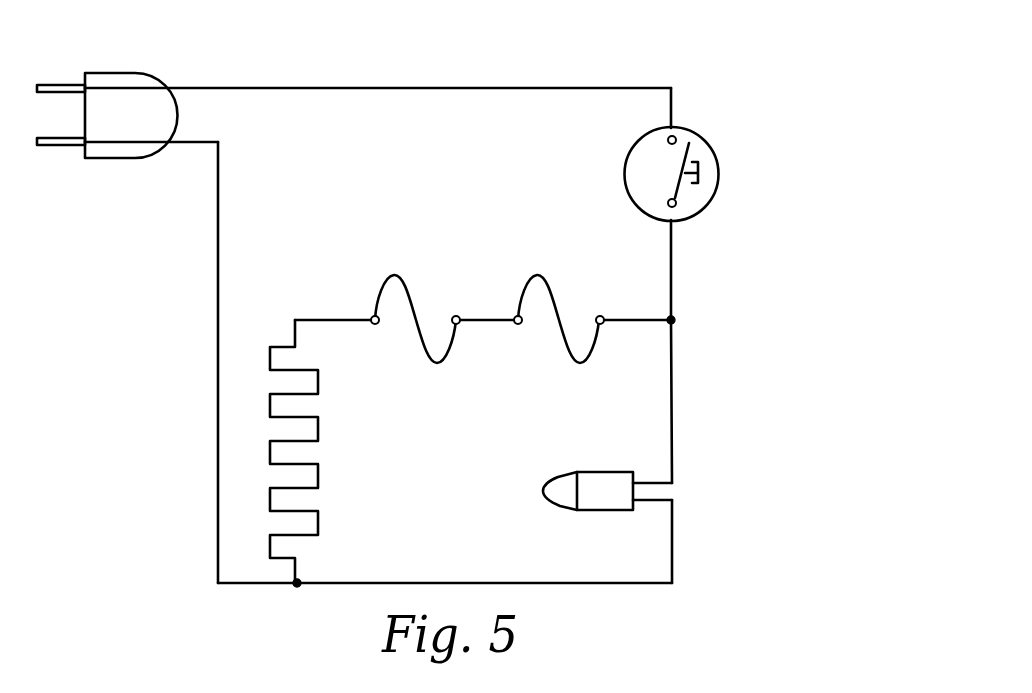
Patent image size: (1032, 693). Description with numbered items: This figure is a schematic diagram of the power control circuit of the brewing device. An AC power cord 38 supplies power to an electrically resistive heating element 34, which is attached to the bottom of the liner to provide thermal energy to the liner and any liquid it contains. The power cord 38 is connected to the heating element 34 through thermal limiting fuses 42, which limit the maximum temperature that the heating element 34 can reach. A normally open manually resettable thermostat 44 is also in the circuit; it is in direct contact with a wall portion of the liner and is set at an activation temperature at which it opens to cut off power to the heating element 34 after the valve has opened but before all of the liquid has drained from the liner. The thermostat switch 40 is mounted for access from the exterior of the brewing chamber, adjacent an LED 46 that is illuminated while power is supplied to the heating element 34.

The heating element 34 is at (328, 418).
The AC power cord 38 is at (180, 77).
The thermostat switch 40 is at (759, 171).
The normally open manually resettable thermostat 44 is at (702, 212).
The thermal limiting fuses 42 is at (388, 273).
The LED 46 is at (602, 502).